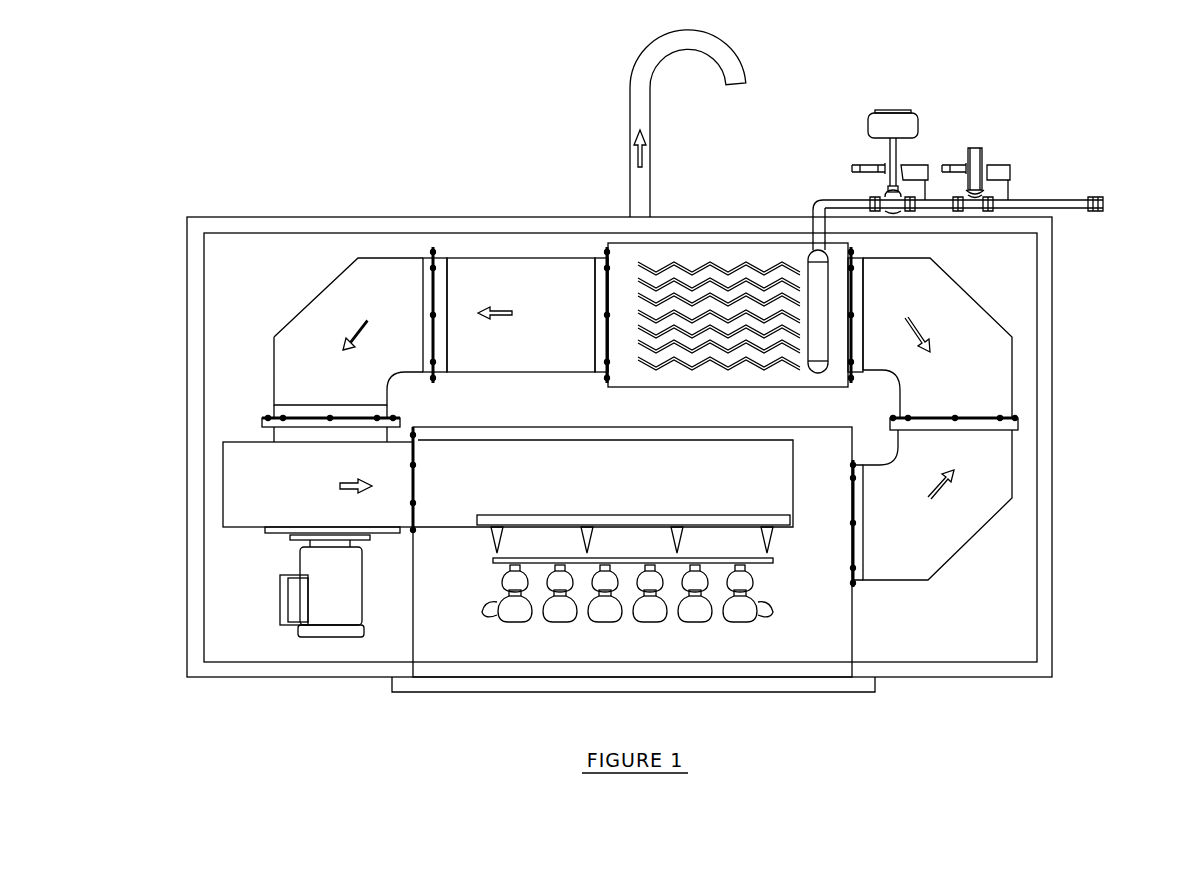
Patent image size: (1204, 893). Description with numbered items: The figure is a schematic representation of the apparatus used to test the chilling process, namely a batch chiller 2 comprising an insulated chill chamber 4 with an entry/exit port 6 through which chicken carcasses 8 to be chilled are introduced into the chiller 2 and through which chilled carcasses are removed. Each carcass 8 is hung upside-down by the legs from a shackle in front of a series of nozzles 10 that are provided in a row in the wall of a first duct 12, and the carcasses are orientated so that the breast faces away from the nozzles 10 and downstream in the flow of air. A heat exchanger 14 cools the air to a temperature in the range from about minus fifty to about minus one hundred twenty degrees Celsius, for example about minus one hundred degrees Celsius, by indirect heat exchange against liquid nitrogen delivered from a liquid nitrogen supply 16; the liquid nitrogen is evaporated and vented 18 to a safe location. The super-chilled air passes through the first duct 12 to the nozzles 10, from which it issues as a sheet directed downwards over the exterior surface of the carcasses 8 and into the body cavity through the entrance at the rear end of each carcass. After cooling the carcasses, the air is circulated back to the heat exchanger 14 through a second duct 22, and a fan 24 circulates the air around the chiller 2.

The batch chiller 2 is at (450, 188).
The insulated chill chamber 4 is at (945, 672).
The entry/exit port 6 is at (530, 688).
The chicken carcasses 8 is at (650, 605).
The nozzles 10 is at (782, 525).
The first duct 12 is at (310, 330).
The heat exchanger 14 is at (708, 245).
The liquid nitrogen supply 16 is at (1107, 210).
The vent 18 is at (737, 80).
The second duct 22 is at (945, 545).
The fan 24 is at (295, 520).